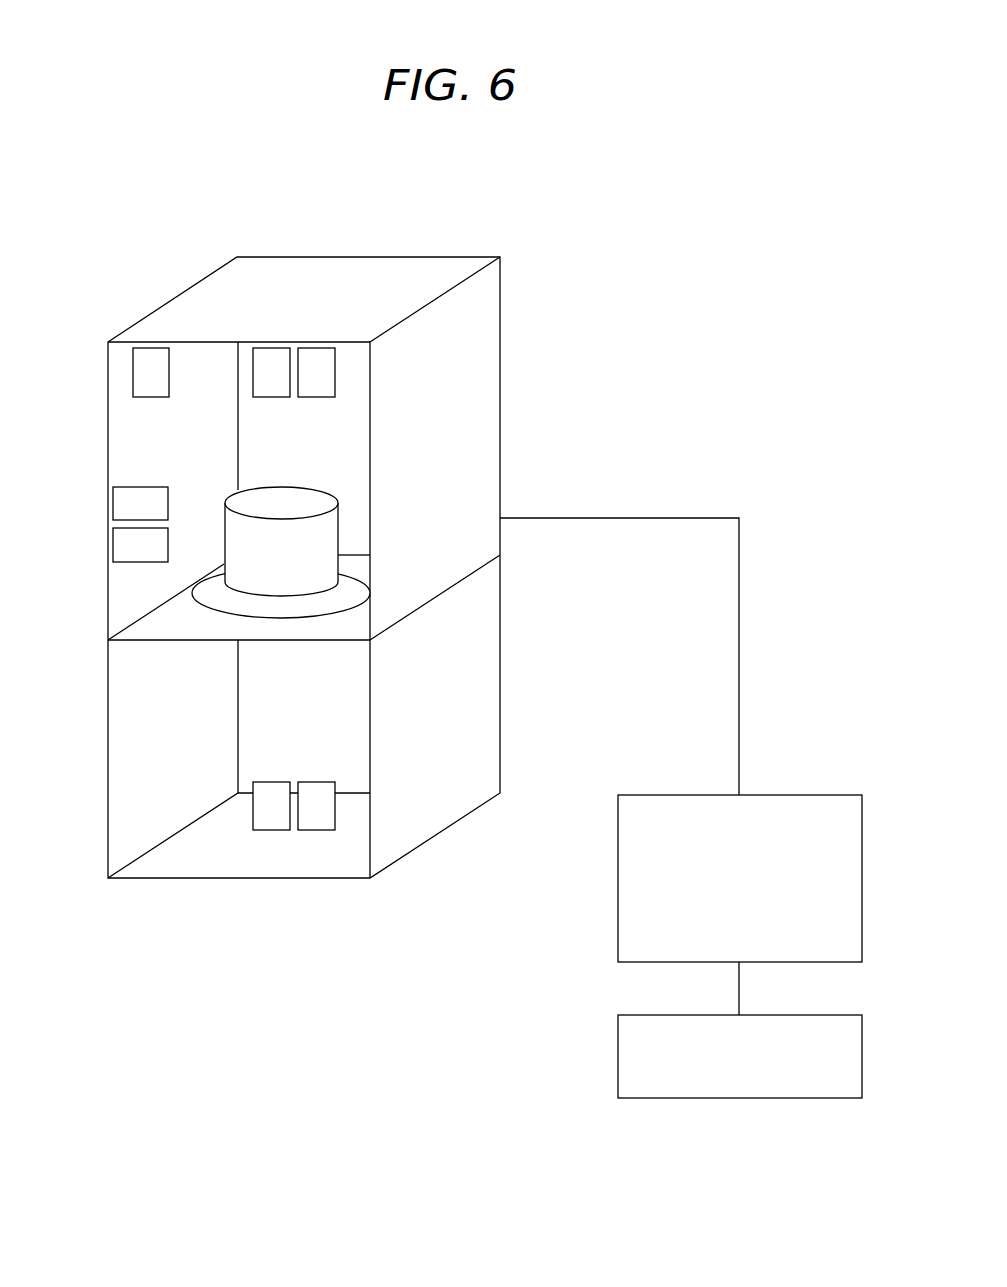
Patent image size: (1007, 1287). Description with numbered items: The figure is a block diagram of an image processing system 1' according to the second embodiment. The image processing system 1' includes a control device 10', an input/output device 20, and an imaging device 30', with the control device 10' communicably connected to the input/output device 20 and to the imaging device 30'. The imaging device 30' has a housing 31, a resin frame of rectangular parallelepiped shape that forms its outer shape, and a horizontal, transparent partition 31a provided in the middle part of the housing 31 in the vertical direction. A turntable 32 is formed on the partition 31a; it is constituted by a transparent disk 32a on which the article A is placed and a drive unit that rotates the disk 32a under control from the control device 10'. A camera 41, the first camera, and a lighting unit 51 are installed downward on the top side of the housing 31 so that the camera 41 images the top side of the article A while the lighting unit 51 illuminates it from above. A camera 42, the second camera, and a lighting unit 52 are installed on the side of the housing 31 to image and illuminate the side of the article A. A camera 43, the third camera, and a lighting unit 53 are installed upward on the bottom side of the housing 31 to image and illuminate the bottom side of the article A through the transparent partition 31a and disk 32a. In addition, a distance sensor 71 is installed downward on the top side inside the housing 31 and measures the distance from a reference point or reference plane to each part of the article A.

The image processing system 1' is at (517, 144).
The imaging device 30' is at (321, 559).
The housing 31 is at (373, 257).
The partition 31a is at (130, 643).
The turntable 32 is at (160, 627).
The disk 32a is at (193, 595).
The article A is at (226, 499).
The distance sensor 71 is at (148, 348).
The camera 41 is at (271, 348).
The lighting unit 51 is at (318, 348).
The lighting unit 52 is at (113, 500).
The camera 42 is at (113, 542).
The camera 43 is at (273, 831).
The lighting unit 53 is at (318, 831).
The control device 10' is at (702, 878).
The input/output device 20 is at (618, 1055).